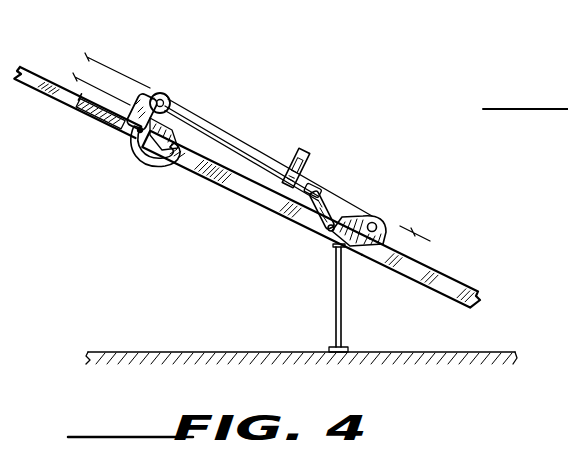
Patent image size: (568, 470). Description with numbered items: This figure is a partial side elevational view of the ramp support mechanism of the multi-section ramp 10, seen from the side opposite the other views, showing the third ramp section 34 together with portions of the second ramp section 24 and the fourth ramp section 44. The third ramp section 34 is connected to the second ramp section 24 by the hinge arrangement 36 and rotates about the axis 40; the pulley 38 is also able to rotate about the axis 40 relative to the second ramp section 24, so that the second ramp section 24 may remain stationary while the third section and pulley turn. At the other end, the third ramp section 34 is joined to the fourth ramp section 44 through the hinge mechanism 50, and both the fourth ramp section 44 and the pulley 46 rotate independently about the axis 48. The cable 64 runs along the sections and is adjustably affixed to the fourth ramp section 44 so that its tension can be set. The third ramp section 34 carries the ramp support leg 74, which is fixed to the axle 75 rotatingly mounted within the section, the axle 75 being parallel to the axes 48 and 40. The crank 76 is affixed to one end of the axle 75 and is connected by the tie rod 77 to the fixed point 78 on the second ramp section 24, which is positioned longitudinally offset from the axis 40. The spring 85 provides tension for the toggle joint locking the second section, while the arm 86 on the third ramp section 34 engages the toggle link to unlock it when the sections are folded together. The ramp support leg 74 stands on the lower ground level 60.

The multi-section ramp 10 is at (236, 103).
The second ramp section 24 is at (36, 66).
The third ramp section 34 is at (230, 187).
The hinge arrangement 36 is at (164, 124).
The pulley 38 is at (166, 94).
The axis 40 is at (133, 124).
The fourth ramp section 44 is at (420, 284).
The pulley 46 is at (385, 222).
The axis 48 is at (373, 222).
The hinge mechanism 50 is at (356, 247).
The lower ground level 60 is at (122, 352).
The cable 64 is at (98, 85).
The ramp support leg 74 is at (336, 296).
The axle 75 is at (326, 237).
The crank 76 is at (328, 200).
The tie rod 77 is at (236, 148).
The fixed point 78 is at (148, 90).
The spring 85 is at (82, 111).
The arm 86 is at (304, 152).